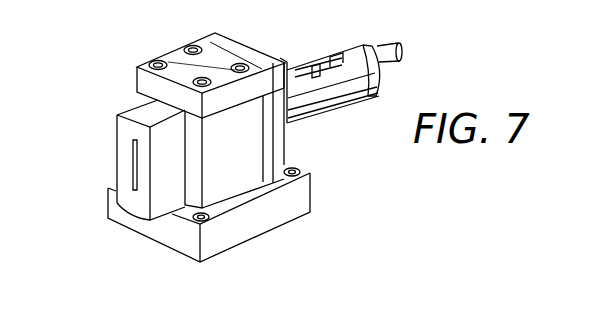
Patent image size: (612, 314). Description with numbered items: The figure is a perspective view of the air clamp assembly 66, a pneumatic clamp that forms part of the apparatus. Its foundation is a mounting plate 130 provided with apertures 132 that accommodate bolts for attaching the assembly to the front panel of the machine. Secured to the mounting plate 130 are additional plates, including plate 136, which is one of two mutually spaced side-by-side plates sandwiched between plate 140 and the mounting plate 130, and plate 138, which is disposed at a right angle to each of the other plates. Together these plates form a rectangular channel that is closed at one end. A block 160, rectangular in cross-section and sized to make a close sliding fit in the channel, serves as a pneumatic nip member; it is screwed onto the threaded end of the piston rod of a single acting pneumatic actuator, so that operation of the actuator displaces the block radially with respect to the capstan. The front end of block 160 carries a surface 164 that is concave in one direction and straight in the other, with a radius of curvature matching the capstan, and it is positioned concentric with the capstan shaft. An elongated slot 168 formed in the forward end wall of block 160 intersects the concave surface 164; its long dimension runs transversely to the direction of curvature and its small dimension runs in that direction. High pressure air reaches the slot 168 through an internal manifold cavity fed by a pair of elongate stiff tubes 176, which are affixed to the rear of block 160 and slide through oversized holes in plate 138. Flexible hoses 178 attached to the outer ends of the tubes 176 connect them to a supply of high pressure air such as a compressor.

The air clamp assembly 66 is at (110, 90).
The mounting plate 130 is at (300, 198).
The apertures 132 is at (298, 170).
The plate 136 is at (253, 152).
The plate 138 is at (250, 50).
The plate 140 is at (175, 55).
The block 160 is at (133, 108).
The concave surface 164 is at (132, 197).
The slot 168 is at (135, 163).
The rigid tubes 176 is at (296, 68).
The flexible hoses 178 is at (332, 55).